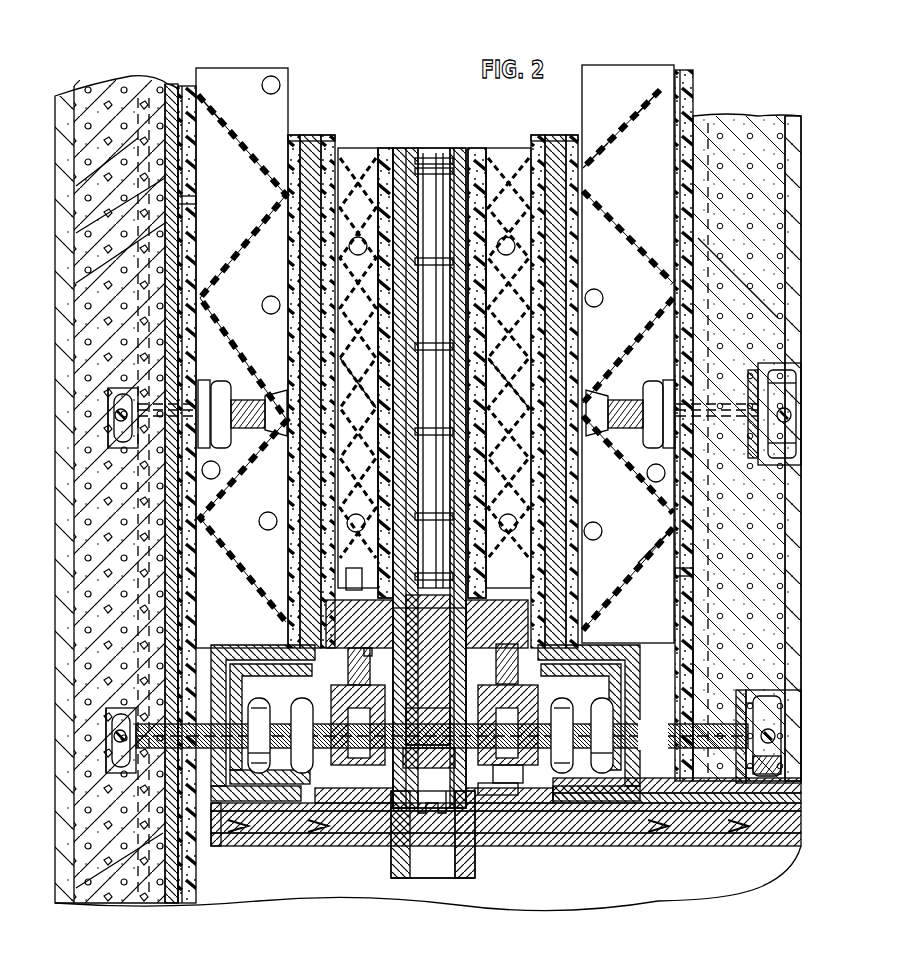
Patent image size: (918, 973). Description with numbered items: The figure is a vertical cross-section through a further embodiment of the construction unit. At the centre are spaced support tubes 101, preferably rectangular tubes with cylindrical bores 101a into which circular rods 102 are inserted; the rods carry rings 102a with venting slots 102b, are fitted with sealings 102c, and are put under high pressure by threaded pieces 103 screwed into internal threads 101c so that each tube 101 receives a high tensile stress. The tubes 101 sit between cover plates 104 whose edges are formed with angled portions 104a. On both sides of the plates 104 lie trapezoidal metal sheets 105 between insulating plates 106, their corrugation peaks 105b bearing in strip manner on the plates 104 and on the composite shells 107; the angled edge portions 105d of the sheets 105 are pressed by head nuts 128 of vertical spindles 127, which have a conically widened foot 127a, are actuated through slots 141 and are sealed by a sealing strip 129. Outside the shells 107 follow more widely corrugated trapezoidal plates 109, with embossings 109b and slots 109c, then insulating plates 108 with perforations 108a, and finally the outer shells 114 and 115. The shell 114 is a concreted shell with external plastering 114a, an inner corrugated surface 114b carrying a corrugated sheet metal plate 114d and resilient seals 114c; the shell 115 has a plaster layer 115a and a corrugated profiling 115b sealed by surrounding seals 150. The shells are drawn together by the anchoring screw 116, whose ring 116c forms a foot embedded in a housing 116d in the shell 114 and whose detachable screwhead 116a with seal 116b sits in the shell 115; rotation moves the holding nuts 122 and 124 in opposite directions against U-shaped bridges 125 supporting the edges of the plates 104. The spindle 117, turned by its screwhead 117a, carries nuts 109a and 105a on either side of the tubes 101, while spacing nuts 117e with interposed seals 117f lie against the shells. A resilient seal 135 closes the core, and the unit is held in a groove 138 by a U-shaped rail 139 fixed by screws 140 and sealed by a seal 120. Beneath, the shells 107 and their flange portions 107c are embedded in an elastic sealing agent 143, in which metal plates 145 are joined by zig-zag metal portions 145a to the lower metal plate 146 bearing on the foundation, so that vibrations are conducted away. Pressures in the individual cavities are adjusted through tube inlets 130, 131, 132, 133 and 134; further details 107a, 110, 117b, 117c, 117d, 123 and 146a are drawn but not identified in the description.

The support tube 101 is at (386, 142).
The cylindrical bore 101a is at (405, 140).
The internal thread 101c is at (430, 663).
The circular rod 102 is at (434, 368).
The ring 102a is at (430, 258).
The venting slot 102b is at (425, 148).
The sealing 102c is at (434, 546).
The threaded piece 103 is at (434, 695).
The cover plate 104 is at (430, 388).
The angled portion 104a is at (322, 840).
The trapezoidal metal sheet 105 is at (349, 319).
The nut 105a is at (434, 377).
The trapezoidal corrugation peak 105b is at (478, 178).
The angled edge portion 105d is at (367, 569).
The insulating plate 106 is at (368, 155).
The composite shell 107 is at (317, 60).
The lower bracket 107a is at (230, 634).
The flange portion 107c is at (286, 770).
The insulating plate 108 is at (178, 153).
The perforation 108a is at (186, 196).
The composite trapezoidal plate 109 is at (244, 117).
The nut 109a is at (270, 378).
The embossing 109b is at (192, 80).
The slot 109c is at (655, 83).
The rail 110 is at (186, 234).
The outer shell 114 is at (110, 114).
The external plastering 114a is at (107, 162).
The corrugated surface 114b is at (120, 253).
The resilient seal 114c is at (150, 815).
The corrugated sheet metal plate 114d is at (158, 187).
The outer shell 115 is at (712, 108).
The plaster layer 115a is at (778, 108).
The corrugated profiling 115b is at (701, 173).
The anchoring screw 116 is at (656, 738).
The screwhead 116a is at (750, 686).
The seal 116b is at (749, 705).
The ring 116c is at (106, 746).
The housing 116d is at (125, 767).
The spindle 117 is at (230, 415).
The screwhead 117a is at (755, 362).
The anchor plate 117b is at (748, 427).
The anchor plate 117c is at (118, 441).
The left anchor 117d is at (116, 380).
The spacing nut 117e is at (212, 381).
The seal 117f is at (196, 372).
The seal 120 is at (428, 726).
The holding nut 122 is at (580, 700).
The nut flange 123 is at (250, 690).
The holding nut 124 is at (410, 724).
The U-shaped bridge 125 is at (375, 668).
The vertical spindle 127 is at (362, 767).
The conically widened foot 127a is at (507, 767).
The head nut 128 is at (421, 664).
The sealing strip 129 is at (379, 617).
The tube inlet 130 is at (595, 290).
The tube inlet 131 is at (262, 86).
The tube inlet 132 is at (214, 465).
The tube inlet 133 is at (640, 470).
The tube inlet 134 is at (498, 228).
The resilient seal 135 is at (206, 842).
The groove 138 is at (434, 863).
The U-shaped rail 139 is at (456, 866).
The screw 140 is at (426, 808).
The slot 141 is at (495, 790).
The elastically insulating sealing agent 143 is at (286, 826).
The metal plate 145 is at (255, 839).
The zig-zag metal portion 145a is at (270, 839).
The metal plate 146 is at (362, 833).
The housing base 146a is at (385, 870).
The surrounding seal 150 is at (744, 760).